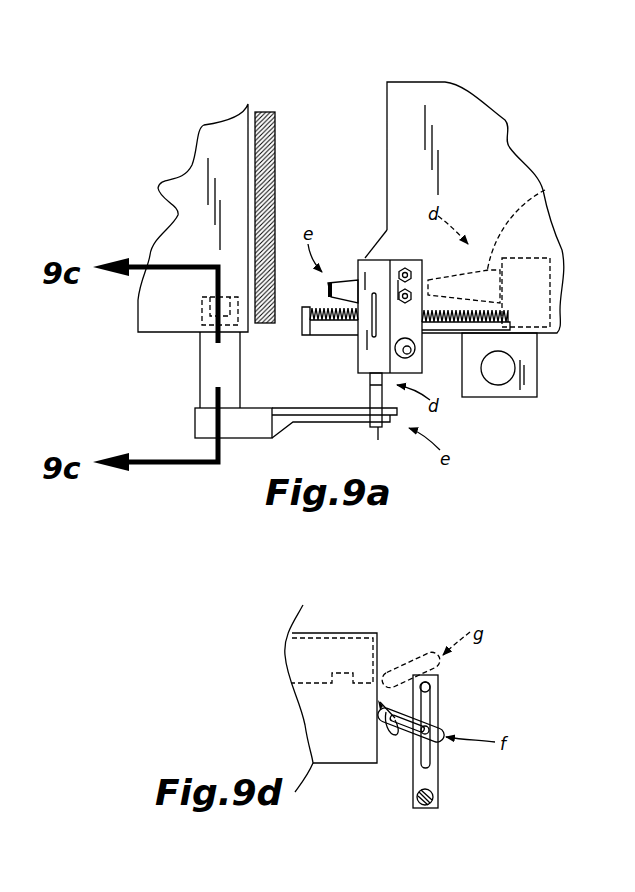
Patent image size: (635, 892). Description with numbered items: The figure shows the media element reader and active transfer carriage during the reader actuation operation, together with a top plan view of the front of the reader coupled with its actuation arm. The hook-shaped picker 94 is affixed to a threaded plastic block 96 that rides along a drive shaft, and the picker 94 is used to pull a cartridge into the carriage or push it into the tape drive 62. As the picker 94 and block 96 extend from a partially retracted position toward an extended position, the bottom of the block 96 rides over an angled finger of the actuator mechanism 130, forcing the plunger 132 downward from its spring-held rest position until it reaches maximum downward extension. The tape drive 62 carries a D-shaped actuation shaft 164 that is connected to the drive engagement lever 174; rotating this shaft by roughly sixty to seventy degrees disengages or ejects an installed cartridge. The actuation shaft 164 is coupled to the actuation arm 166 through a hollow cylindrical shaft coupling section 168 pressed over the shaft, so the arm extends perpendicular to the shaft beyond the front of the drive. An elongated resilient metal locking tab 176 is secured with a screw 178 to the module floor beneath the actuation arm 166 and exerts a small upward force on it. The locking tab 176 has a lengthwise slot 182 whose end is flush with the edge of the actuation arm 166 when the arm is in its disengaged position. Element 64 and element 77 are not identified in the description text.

In FIG. 9A, the tape drive 62 is at (140, 334).
In FIG. 9D, the tape drive 62 is at (331, 698).
In FIG. 9A, the frame member 64 is at (509, 116).
In FIG. 9D, the opening 77 is at (360, 633).
In FIG. 9A, the picker 94 is at (345, 283).
In FIG. 9A, the plastic block 96 is at (540, 298).
In FIG. 9A, the actuator mechanism 130 is at (370, 230).
In FIG. 9A, the plunger 132 is at (377, 428).
In FIG. 9A, the actuation shaft 164 is at (212, 320).
In FIG. 9A, the actuation arm 166 is at (322, 408).
In FIG. 9D, the actuation arm 166 is at (437, 730).
In FIG. 9A, the shaft coupling section 168 is at (208, 385).
In FIG. 9A, the drive engagement lever 174 is at (275, 186).
In FIG. 9D, the drive engagement lever 174 is at (380, 700).
In FIG. 9D, the locking tab 176 is at (436, 777).
In FIG. 9D, the screw 178 is at (437, 797).
In FIG. 9D, the slot 182 is at (427, 703).